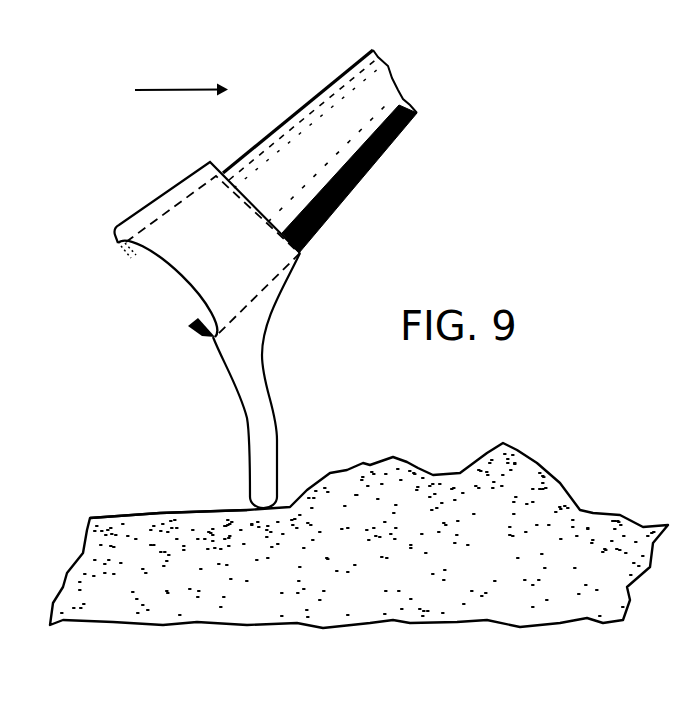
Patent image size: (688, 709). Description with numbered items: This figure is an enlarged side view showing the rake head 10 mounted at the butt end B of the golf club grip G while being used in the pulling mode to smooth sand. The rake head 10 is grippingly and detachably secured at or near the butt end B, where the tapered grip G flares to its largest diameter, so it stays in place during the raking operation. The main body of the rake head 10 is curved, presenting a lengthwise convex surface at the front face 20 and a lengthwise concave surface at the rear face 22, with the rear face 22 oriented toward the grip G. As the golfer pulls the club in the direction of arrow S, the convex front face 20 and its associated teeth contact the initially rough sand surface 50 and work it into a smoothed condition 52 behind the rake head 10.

The rake head 10 is at (148, 205).
The front face 20 is at (276, 412).
The rear face 22 is at (246, 413).
The rough sand surface 50 is at (420, 468).
The smoothed condition 52 is at (128, 518).
The butt end B is at (153, 307).
The golf club grip G is at (323, 168).
The arrow S is at (181, 69).